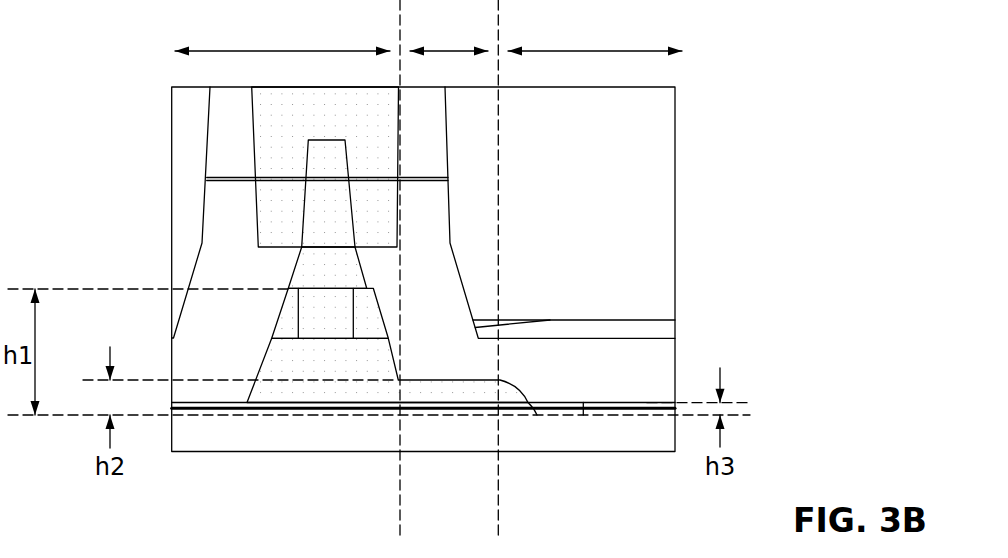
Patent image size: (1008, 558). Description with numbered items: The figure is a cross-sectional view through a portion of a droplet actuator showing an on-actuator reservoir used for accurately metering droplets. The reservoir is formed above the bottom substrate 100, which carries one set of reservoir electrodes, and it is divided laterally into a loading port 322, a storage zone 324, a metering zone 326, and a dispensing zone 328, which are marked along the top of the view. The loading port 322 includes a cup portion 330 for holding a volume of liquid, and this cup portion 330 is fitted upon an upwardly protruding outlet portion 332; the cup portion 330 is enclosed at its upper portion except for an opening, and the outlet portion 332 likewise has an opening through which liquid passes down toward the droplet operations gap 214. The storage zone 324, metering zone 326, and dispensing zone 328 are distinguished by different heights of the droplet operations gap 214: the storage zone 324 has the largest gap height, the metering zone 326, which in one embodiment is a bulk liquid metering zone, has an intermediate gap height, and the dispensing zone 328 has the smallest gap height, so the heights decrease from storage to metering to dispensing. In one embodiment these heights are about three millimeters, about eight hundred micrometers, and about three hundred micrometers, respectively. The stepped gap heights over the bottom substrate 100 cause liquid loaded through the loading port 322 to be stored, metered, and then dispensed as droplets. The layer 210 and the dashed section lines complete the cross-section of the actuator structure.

The bottom substrate 100 is at (322, 445).
The dielectric layer 210 is at (459, 270).
The droplet operations gap 214 is at (593, 410).
The loading port 322 is at (433, 117).
The storage zone 324 is at (282, 36).
The metering zone 326 is at (449, 36).
The dispensing zone 328 is at (595, 36).
The cup portion 330 is at (252, 129).
The outlet portion 332 is at (308, 167).